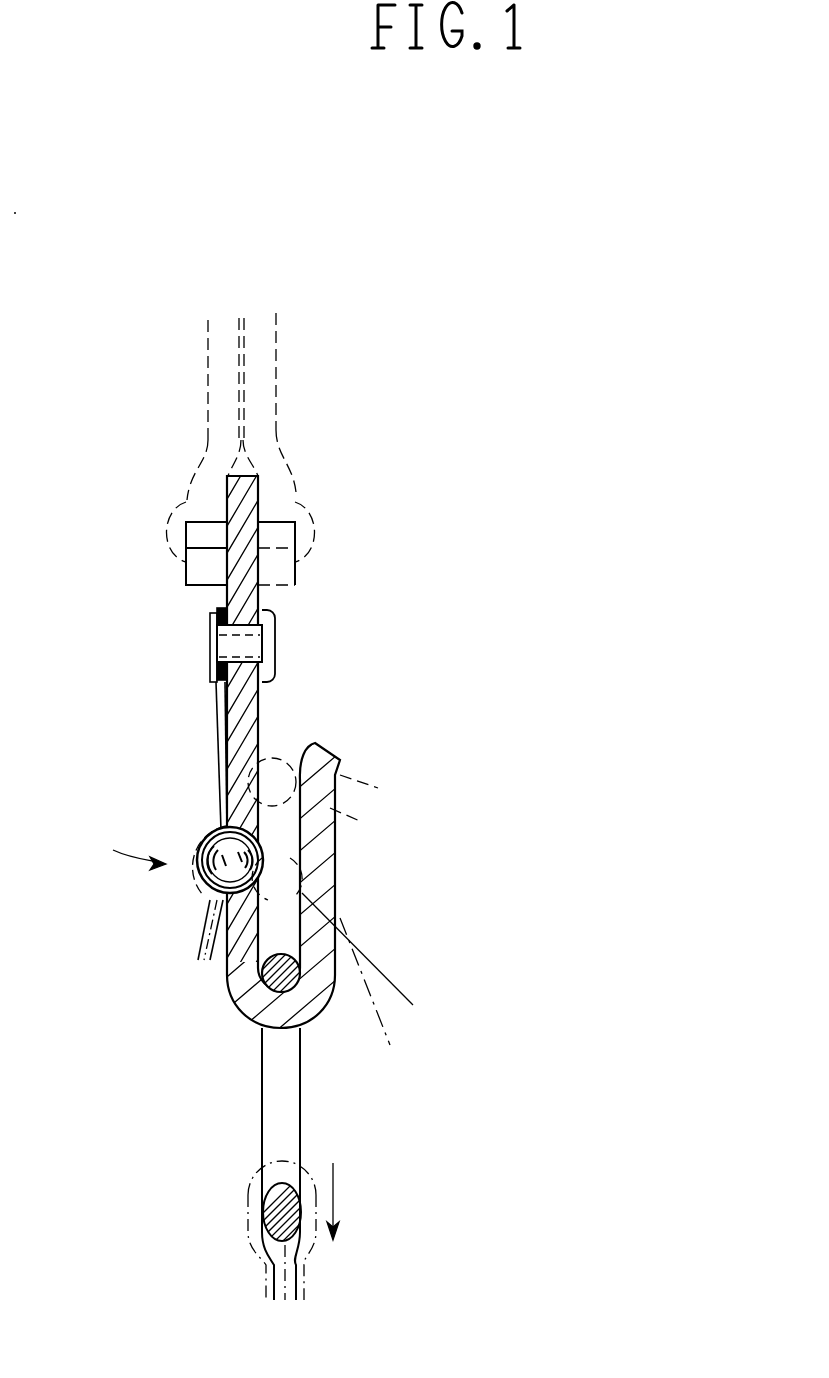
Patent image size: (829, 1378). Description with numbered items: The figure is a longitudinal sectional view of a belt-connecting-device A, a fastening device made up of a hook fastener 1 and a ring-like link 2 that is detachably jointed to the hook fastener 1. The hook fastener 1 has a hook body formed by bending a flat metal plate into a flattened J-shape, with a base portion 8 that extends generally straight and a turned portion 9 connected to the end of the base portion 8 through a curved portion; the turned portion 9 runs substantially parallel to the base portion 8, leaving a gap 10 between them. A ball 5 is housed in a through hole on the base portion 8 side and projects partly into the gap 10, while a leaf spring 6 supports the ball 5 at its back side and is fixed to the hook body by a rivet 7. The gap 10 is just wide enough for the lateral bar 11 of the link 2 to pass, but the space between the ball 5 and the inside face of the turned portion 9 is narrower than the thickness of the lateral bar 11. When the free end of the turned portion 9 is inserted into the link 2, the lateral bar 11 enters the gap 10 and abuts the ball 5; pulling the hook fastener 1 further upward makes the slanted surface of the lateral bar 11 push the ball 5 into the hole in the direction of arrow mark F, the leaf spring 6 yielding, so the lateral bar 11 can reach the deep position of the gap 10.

The hook fastener 1 is at (331, 752).
The link 2 is at (292, 1092).
The ball 5 is at (210, 822).
The leaf spring 6 is at (220, 727).
The rivet 7 is at (217, 656).
The base portion 8 is at (250, 700).
The turned portion 9 is at (333, 913).
The gap 10 is at (279, 753).
The lateral bar 11 is at (286, 976).
The belt-connecting-device A is at (430, 493).
The arrow mark F is at (190, 902).